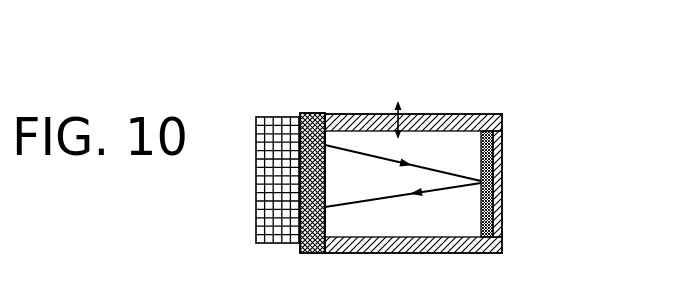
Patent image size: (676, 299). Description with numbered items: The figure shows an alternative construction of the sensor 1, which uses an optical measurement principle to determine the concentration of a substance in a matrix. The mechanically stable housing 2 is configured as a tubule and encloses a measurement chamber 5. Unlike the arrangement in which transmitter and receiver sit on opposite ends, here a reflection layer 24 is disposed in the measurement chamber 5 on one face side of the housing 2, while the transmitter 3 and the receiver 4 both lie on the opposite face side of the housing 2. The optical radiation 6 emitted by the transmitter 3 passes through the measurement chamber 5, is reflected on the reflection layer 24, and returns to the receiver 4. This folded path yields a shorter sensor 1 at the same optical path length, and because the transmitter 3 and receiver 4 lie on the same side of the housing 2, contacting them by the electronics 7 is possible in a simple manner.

The sensor 1 is at (553, 182).
The housing 2 is at (412, 112).
The transmitter 3 is at (313, 113).
The receiver 4 is at (313, 255).
The measurement chamber 5 is at (467, 138).
The optical radiation 6 is at (424, 172).
The electronics 7 is at (280, 117).
The reflection layer 24 is at (470, 205).